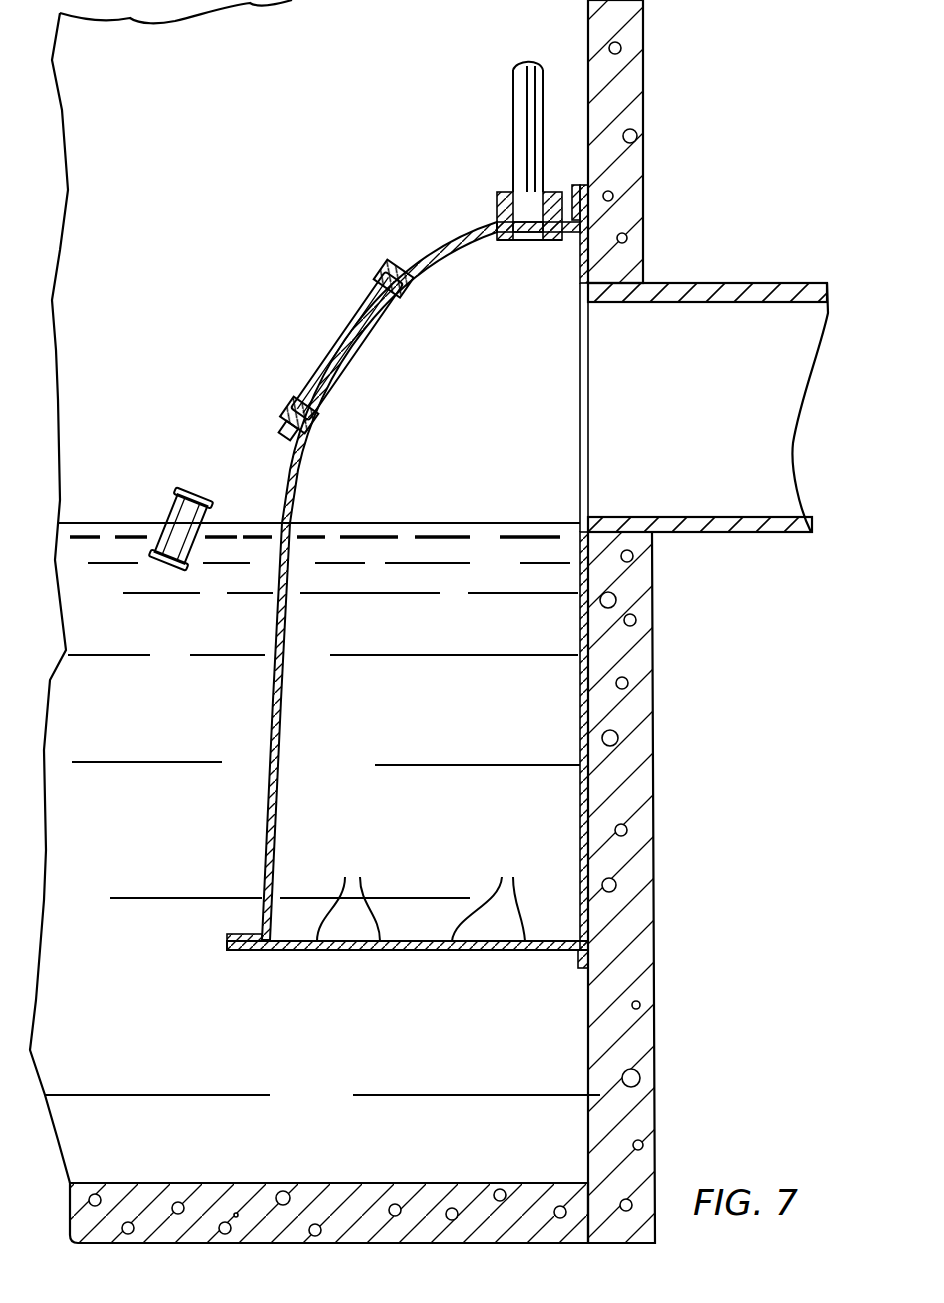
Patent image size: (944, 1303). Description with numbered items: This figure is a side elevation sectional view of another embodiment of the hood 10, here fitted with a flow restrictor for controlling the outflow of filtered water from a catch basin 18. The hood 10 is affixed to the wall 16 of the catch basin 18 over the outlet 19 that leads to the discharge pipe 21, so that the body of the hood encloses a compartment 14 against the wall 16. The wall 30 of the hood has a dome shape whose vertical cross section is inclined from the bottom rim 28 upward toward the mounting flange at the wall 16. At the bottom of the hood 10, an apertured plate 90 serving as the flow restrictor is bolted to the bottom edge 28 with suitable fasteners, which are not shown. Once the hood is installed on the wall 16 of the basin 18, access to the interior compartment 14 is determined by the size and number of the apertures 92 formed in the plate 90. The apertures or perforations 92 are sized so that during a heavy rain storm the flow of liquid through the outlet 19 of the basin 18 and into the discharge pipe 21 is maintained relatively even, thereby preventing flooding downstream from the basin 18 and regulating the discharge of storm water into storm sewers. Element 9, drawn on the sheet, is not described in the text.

The heating element 9 is at (402, 264).
The hood 10 is at (458, 222).
The compartment 14 is at (484, 377).
The wall 16 is at (623, 712).
The catch basin 18 is at (655, 1078).
The outlet 19 is at (617, 464).
The discharge pipe 21 is at (732, 277).
The bottom rim 28 is at (233, 951).
The wall 30 is at (283, 473).
The apertured plate 90 is at (490, 951).
The apertures 92 is at (423, 893).